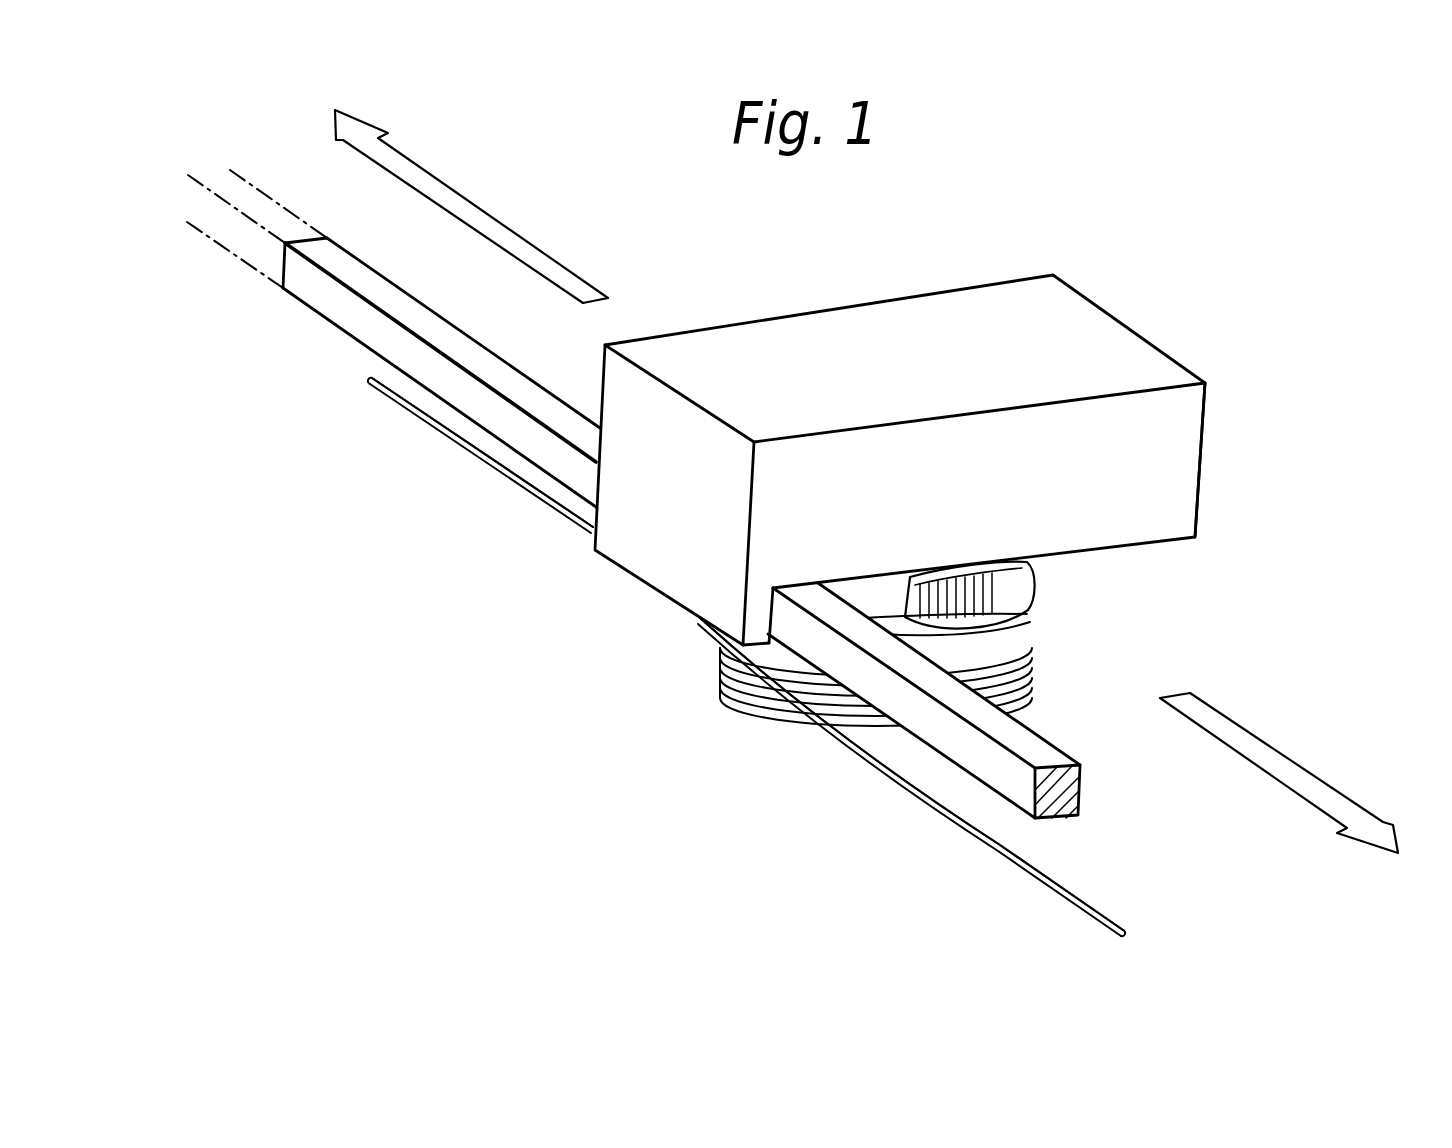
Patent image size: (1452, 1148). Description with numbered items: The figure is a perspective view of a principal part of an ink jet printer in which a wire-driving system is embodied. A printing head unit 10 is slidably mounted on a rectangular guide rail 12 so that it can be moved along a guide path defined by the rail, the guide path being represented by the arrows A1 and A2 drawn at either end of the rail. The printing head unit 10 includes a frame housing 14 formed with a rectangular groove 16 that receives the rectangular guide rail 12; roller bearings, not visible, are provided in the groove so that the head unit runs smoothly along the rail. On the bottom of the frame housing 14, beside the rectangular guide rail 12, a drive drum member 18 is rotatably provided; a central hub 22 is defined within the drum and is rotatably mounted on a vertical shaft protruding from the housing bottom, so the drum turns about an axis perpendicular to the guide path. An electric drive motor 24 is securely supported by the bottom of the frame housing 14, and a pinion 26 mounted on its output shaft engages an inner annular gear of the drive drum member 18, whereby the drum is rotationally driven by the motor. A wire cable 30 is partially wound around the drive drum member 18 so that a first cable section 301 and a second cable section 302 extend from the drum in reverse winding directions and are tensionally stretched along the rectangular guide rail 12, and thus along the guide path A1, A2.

The printing head unit 10 is at (925, 270).
The rectangular guide rail 12 is at (477, 330).
The frame housing 14 is at (1174, 552).
The rectangular groove 16 is at (826, 587).
The drive drum member 18 is at (1050, 596).
The central hub 22 is at (1028, 670).
The electric drive motor 24 is at (1040, 573).
The pinion 26 is at (1038, 636).
The wire cable 30 is at (812, 740).
The first cable section 301 is at (470, 446).
The second cable section 302 is at (957, 820).
The arrow A1 is at (480, 204).
The arrow A2 is at (1283, 755).